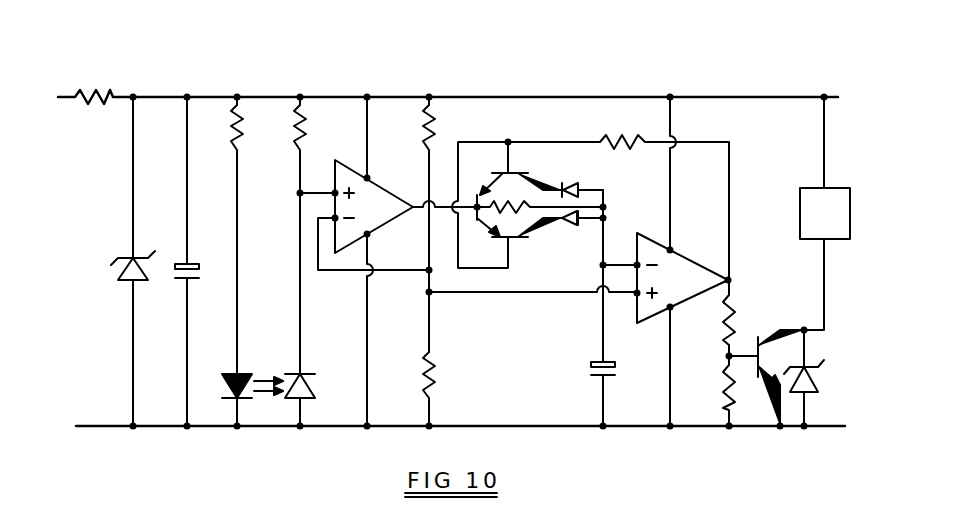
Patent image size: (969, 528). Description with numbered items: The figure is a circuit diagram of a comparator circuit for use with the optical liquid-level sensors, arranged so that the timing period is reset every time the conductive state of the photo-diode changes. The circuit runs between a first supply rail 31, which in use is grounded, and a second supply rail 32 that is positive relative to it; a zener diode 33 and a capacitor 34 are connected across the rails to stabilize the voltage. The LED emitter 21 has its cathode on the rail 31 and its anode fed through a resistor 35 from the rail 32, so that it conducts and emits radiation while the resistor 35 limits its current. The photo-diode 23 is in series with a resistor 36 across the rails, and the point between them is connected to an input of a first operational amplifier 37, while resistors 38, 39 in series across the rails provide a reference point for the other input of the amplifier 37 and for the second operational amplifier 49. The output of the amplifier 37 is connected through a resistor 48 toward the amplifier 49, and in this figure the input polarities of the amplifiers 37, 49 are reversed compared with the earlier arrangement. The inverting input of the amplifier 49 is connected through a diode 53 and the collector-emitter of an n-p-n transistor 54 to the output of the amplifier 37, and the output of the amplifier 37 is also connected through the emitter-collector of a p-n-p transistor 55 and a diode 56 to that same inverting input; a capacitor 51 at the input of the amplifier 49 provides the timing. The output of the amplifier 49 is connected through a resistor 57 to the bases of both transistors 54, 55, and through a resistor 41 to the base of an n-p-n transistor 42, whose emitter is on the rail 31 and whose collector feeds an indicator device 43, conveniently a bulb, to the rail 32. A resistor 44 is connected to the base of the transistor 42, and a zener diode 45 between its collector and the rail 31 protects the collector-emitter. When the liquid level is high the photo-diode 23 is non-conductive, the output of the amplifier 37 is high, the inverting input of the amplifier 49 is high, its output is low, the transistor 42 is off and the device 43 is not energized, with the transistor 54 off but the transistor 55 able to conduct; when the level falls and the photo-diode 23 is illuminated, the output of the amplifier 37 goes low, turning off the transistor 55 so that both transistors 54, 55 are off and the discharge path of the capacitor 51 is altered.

The LED emitter 21 is at (243, 377).
The photo-diode 23 is at (305, 375).
The first supply rail 31 is at (100, 428).
The second supply rail 32 is at (63, 95).
The zener diode 33 is at (118, 278).
The capacitor 34 is at (178, 266).
The resistor 35 is at (240, 132).
The resistor 36 is at (308, 143).
The operational amplifier 37 is at (378, 195).
The resistor 38 is at (440, 133).
The resistor 39 is at (443, 380).
The resistor 41 is at (745, 320).
The n-p-n transistor 42 is at (770, 350).
The indicator device 43 is at (812, 192).
The resistor 44 is at (728, 386).
The zener diode 45 is at (820, 380).
The resistor 48 is at (505, 210).
The second operational amplifier 49 is at (690, 262).
The capacitor 51 is at (597, 360).
The diode 53 is at (572, 188).
The n-p-n transistor 54 is at (515, 178).
The p-n-p transistor 55 is at (530, 240).
The diode 56 is at (570, 225).
The resistor 57 is at (605, 137).